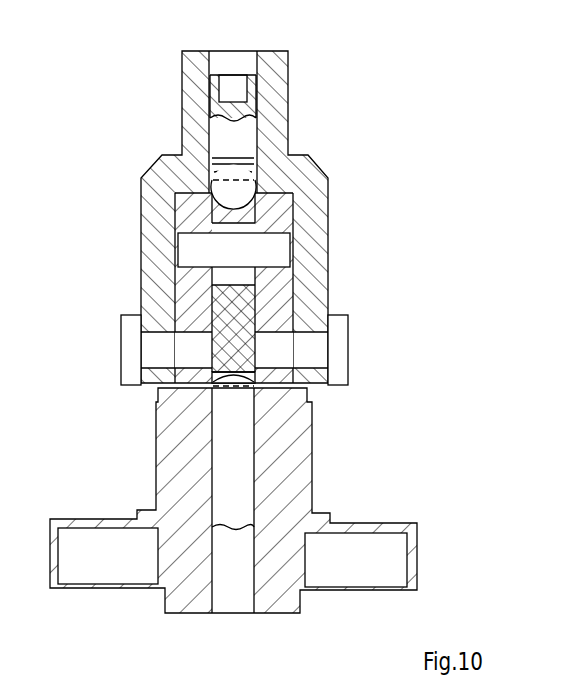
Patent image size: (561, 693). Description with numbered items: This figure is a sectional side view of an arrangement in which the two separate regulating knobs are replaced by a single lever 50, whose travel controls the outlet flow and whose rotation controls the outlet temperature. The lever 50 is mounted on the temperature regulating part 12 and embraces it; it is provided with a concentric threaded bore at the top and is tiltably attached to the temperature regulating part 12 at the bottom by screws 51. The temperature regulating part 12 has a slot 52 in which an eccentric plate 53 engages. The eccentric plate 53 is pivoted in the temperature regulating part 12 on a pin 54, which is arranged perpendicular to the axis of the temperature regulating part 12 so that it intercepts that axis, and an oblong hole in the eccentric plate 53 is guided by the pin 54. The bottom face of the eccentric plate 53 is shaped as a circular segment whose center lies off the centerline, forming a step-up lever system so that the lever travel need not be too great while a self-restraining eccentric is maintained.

The lever 50 is at (305, 172).
The pin 54 is at (275, 247).
The eccentric plate 53 is at (240, 300).
The screws 51 is at (337, 343).
The slot 52 is at (240, 384).
The temperature regulating part 12 is at (290, 452).